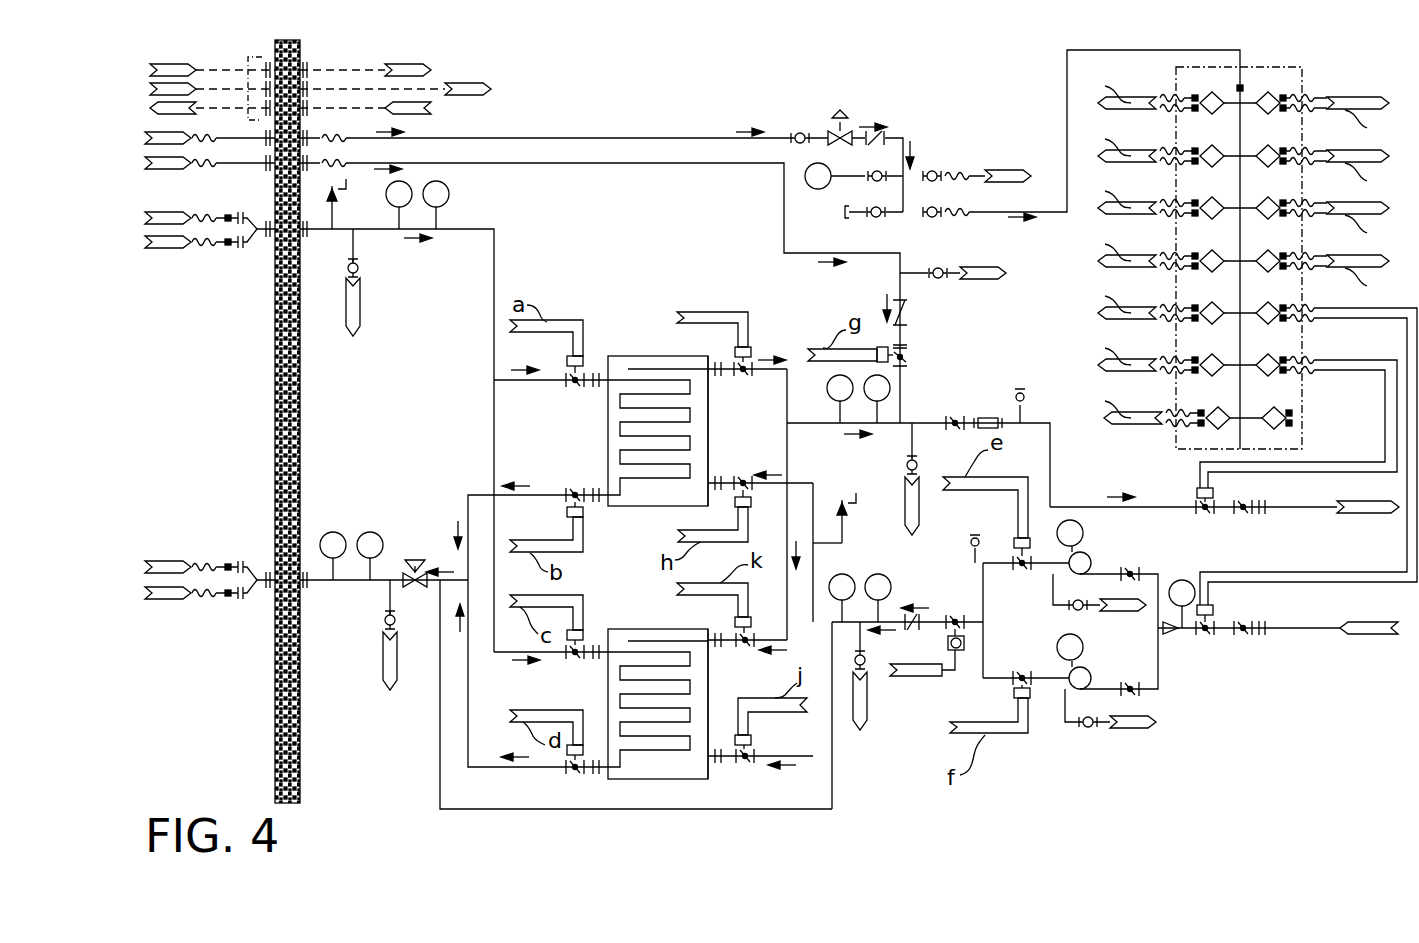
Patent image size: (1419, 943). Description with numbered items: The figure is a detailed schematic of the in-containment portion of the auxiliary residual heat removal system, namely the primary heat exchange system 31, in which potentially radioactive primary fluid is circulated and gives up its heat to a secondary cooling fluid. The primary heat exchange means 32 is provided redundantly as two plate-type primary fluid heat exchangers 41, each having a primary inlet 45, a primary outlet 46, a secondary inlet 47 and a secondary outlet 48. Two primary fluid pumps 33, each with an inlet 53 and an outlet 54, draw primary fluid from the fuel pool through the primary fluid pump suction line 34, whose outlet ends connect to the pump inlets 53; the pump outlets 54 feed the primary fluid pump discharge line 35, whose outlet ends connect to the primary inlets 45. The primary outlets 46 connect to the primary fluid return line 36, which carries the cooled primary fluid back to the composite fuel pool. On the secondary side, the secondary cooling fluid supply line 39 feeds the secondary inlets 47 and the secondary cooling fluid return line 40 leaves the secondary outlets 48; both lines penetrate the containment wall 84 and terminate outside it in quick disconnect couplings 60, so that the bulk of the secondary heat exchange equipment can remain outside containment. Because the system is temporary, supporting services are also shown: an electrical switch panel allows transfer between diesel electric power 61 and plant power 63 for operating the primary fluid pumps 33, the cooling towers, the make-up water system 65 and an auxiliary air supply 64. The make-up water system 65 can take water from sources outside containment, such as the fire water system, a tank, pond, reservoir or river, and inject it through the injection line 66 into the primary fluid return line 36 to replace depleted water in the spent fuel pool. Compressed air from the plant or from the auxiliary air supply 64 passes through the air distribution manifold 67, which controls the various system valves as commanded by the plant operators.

The primary heat exchange system 31 is at (892, 546).
The primary heat exchanger 32 is at (624, 344).
The primary fluid pump 33 is at (1089, 566).
The primary fluid pump suction line 34 is at (1288, 629).
The primary fluid pump discharge line 35 is at (893, 618).
The primary fluid return line 36 is at (1072, 506).
The secondary cooling fluid supply line 39 is at (305, 232).
The secondary cooling fluid return line 40 is at (548, 498).
The primary fluid heat exchanger 41 is at (708, 423).
The primary inlet 45 is at (717, 480).
The primary outlet 46 is at (719, 364).
The secondary inlet 47 is at (600, 385).
The secondary outlet 48 is at (596, 501).
The pump inlet 53 is at (1070, 578).
The pump outlet 54 is at (1028, 558).
The quick disconnect coupling 60 is at (223, 218).
The diesel electric power 61 is at (168, 62).
The plant power 63 is at (170, 98).
The auxiliary air supply 64 is at (170, 136).
The make-up water system 65 is at (170, 167).
The injection line 66 is at (642, 163).
The air distribution manifold 67 is at (1305, 85).
The containment wall 84 is at (300, 750).